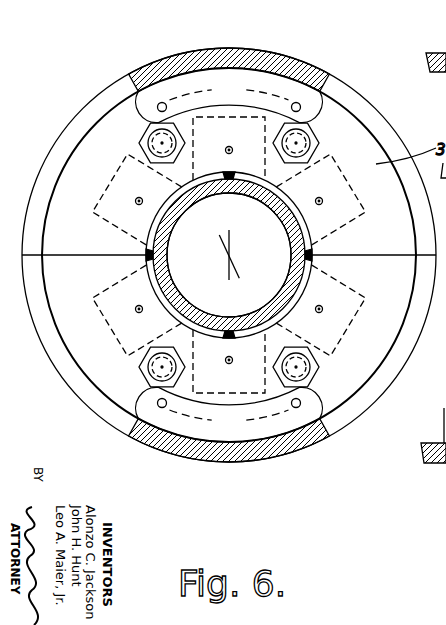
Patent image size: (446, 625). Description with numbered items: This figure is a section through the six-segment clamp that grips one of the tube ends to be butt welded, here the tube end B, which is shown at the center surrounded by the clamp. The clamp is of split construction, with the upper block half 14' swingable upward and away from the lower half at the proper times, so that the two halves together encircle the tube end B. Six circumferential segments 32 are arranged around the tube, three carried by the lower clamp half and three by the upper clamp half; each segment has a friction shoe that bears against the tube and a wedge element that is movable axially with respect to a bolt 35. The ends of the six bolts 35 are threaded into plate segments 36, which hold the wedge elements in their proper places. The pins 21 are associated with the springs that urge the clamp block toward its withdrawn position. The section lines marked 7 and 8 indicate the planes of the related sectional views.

The upper block half 14' is at (229, 255).
The pin 21 is at (229, 259).
The circumferential segment 32 is at (98, 208).
The bolt 35 is at (231, 147).
The plate segment 36 is at (373, 361).
The tube end B is at (286, 230).
The section line 7- 7 is at (154, 275).
The section line 8- 8 is at (256, 257).